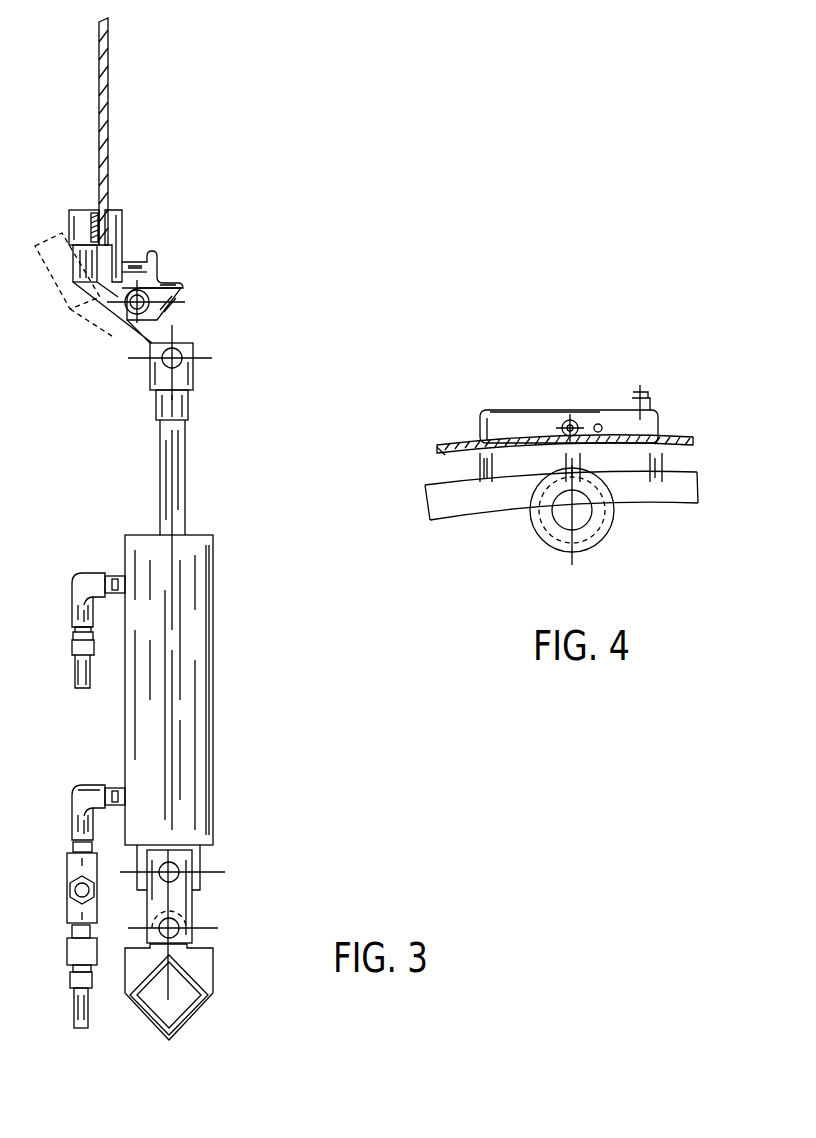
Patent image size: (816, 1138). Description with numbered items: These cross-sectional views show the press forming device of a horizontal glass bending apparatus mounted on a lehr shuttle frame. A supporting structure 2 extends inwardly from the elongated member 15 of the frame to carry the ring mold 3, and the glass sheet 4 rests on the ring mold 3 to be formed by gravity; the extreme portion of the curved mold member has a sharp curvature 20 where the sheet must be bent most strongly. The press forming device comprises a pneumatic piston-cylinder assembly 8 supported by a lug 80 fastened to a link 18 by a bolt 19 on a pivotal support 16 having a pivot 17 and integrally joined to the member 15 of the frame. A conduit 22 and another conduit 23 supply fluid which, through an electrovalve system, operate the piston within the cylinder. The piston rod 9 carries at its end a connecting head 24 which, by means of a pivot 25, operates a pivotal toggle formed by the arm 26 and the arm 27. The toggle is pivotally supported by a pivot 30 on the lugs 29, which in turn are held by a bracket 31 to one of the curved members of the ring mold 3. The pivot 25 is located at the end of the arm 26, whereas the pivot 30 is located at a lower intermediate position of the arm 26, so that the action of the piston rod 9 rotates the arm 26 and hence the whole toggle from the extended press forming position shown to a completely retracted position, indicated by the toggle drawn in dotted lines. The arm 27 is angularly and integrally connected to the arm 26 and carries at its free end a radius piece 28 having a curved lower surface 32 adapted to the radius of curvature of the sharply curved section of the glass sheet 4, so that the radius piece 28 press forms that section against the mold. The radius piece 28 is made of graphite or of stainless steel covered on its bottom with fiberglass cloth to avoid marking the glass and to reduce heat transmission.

In FIG. 4, the supporting structure 2 is at (500, 512).
In FIG. 4, the ring mold 3 is at (447, 458).
In FIG. 3, the glass sheet 4 is at (108, 81).
In FIG. 4, the glass sheet 4 is at (668, 441).
In FIG. 3, the pneumatic piston-cylinder assembly 8 is at (175, 658).
In FIG. 3, the piston rod 9 is at (170, 490).
In FIG. 3, the elongated member 15 is at (195, 1018).
In FIG. 3, the pivotal support 16 is at (112, 212).
In FIG. 3, the pivot 17 is at (175, 930).
In FIG. 3, the link 18 is at (175, 890).
In FIG. 3, the bolt 19 is at (162, 880).
In FIG. 4, the sharp curvature portion 20 is at (672, 452).
In FIG. 3, the conduit 22 is at (80, 812).
In FIG. 3, the conduit 23 is at (87, 583).
In FIG. 3, the connecting head 24 is at (155, 372).
In FIG. 4, the connecting head 24 is at (557, 552).
In FIG. 3, the pivot 25 is at (178, 362).
In FIG. 3, the arm of the toggle 26 is at (140, 333).
In FIG. 3, the arm of the toggle 27 is at (86, 265).
In FIG. 3, the radius piece 28 is at (81, 222).
In FIG. 4, the radius piece 28 is at (612, 418).
In FIG. 3, the lugs 29 is at (106, 303).
In FIG. 3, the pivot 30 is at (147, 307).
In FIG. 3, the bracket 31 is at (166, 278).
In FIG. 3, the curved lower surface 32 is at (94, 212).
In FIG. 3, the lug 80 is at (192, 858).